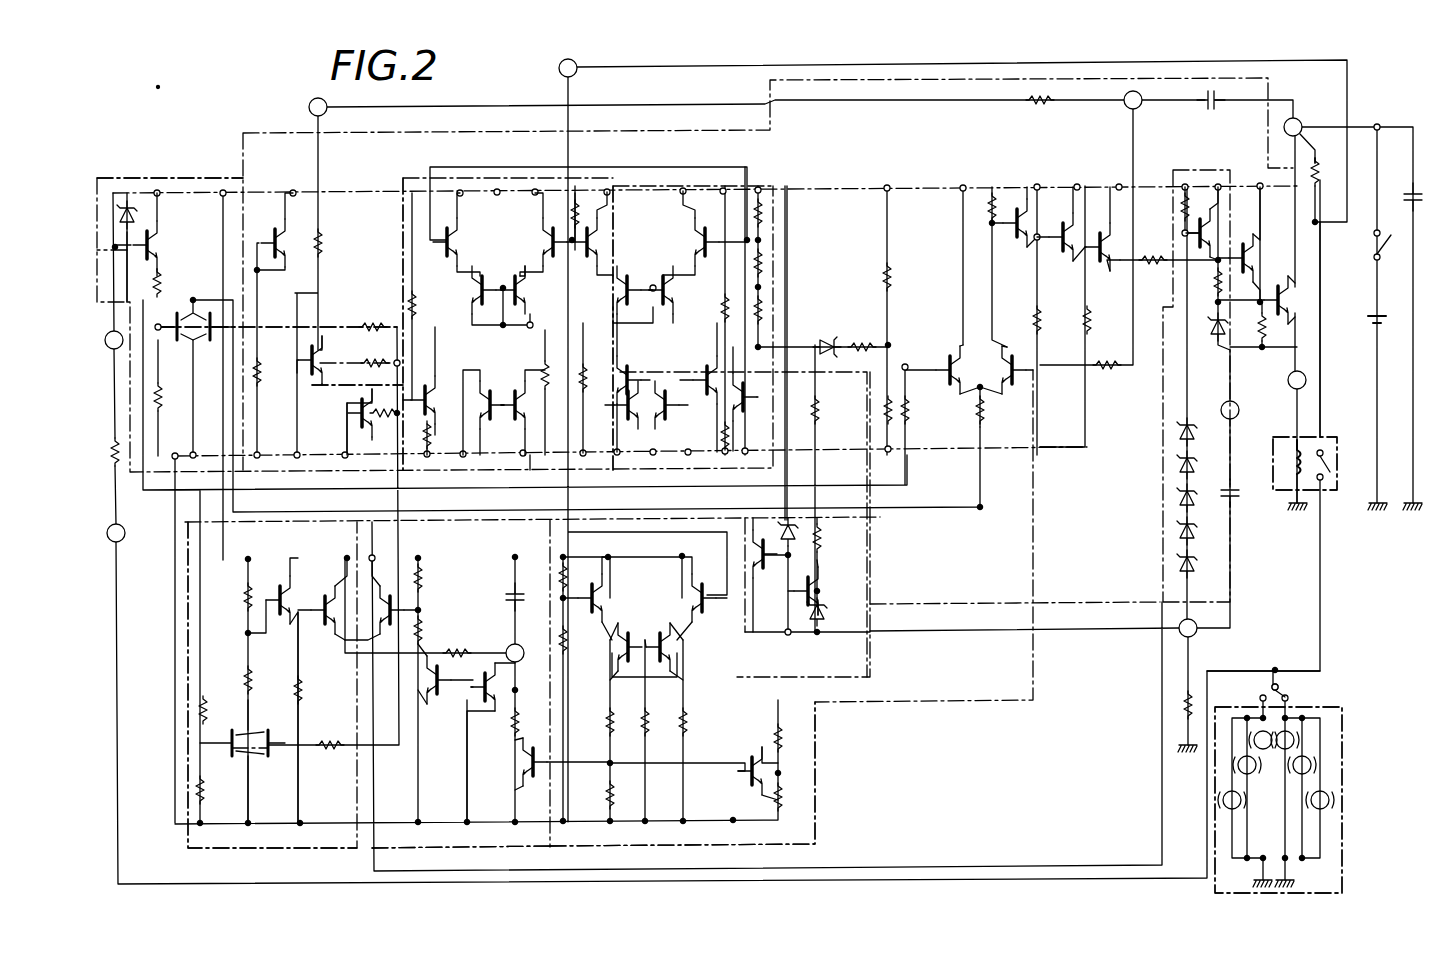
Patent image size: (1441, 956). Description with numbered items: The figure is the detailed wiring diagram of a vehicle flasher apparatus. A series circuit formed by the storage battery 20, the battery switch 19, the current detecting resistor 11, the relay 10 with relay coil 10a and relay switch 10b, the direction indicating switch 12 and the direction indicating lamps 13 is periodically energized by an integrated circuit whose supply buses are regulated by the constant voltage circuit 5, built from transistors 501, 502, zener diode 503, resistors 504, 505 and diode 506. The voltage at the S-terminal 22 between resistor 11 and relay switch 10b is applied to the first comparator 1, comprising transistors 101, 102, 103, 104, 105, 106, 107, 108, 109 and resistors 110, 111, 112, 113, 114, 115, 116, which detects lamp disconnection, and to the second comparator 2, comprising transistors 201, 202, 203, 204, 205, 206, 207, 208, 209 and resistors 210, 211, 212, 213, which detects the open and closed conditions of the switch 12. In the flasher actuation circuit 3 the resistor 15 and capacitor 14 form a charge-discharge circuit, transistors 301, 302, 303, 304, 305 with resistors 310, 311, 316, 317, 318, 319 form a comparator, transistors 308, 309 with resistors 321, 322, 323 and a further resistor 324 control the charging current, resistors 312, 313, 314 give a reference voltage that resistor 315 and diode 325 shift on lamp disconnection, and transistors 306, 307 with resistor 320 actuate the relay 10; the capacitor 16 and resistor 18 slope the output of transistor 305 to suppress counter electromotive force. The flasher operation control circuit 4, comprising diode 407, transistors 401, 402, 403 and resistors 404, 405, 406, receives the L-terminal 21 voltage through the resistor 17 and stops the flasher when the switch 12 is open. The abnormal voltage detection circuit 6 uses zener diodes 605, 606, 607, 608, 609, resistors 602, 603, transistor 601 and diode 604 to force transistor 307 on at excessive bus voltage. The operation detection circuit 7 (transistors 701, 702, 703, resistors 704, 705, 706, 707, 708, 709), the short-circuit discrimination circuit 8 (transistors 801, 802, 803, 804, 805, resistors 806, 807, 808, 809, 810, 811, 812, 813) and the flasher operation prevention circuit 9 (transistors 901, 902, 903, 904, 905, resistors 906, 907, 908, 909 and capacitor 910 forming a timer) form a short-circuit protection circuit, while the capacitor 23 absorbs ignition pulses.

The first comparator 1 is at (612, 174).
The second comparator 2 is at (414, 176).
The flasher actuation circuit 3 is at (736, 126).
The flasher operation control circuit 4 is at (140, 160).
The constant voltage circuit 5 is at (870, 648).
The abnormal voltage detection circuit 6 is at (1158, 612).
The operation detection circuit 7 is at (296, 852).
The short-circuit discrimination circuit 8 is at (650, 852).
The flasher operation prevention circuit 9 is at (406, 852).
The relay 10 is at (1340, 489).
The relay coil 10a is at (1274, 452).
The relay switch 10b is at (1332, 454).
The current detecting resistor 11 is at (1333, 170).
The direction indicating switch 12 is at (1286, 696).
The direction indicating lamps 13 is at (1352, 734).
The charge-discharge capacitor 14 is at (1212, 106).
The resistor 15 is at (1038, 108).
The capacitor 16 is at (1240, 500).
The resistor 17 is at (112, 458).
The resistor 18 is at (1184, 710).
The battery switch 19 is at (1390, 242).
The storage battery 20 is at (1384, 328).
The L-terminal 21 is at (1263, 659).
The S-terminal 22 is at (1346, 329).
The capacitor 23 is at (1418, 200).
The transistor 101 is at (600, 250).
The transistor 102 is at (684, 244).
The transistor 103 is at (614, 290).
The transistor 104 is at (676, 292).
The transistor 105 is at (632, 366).
The transistor 106 is at (631, 424).
The transistor 107 is at (666, 424).
The transistor 108 is at (696, 378).
The transistor 109 is at (744, 394).
The resistor 110 is at (590, 212).
The resistor 111 is at (595, 372).
The resistor 112 is at (710, 318).
The resistor 113 is at (722, 436).
The resistor 114 is at (766, 212).
The resistor 115 is at (768, 266).
The resistor 116 is at (755, 318).
The transistor 201 is at (458, 240).
The transistor 202 is at (544, 240).
The transistor 203 is at (471, 286).
The transistor 204 is at (520, 288).
The transistor 205 is at (484, 398).
The transistor 206 is at (523, 430).
The transistor 207 is at (530, 470).
The transistor 208 is at (434, 386).
The transistor 209 is at (356, 390).
The resistor 210 is at (414, 304).
The resistor 211 is at (542, 372).
The resistor 212 is at (434, 438).
The resistor 213 is at (375, 427).
The transistor 301 is at (942, 364).
The transistor 302 is at (1016, 364).
The transistor 303 is at (1030, 226).
The transistor 304 is at (1072, 254).
The output transistor 305 is at (1106, 244).
The transistor 306 is at (1275, 247).
The output transistor 307 is at (1302, 304).
The transistor 308 is at (306, 352).
The transistor 309 is at (274, 242).
The resistor 310 is at (1000, 214).
The resistor 311 is at (996, 406).
The resistor 312 is at (917, 406).
The resistor 313 is at (888, 282).
The resistor 314 is at (882, 410).
The resistor 315 is at (866, 348).
The resistor 316 is at (1040, 318).
The resistor 317 is at (1092, 318).
The resistor 318 is at (1107, 368).
The resistor 319 is at (1152, 258).
The resistor 320 is at (1300, 337).
The resistor 321 is at (340, 234).
The resistor 322 is at (285, 358).
The resistor 323 is at (382, 350).
The resistor 324 is at (382, 312).
The diode 325 is at (824, 338).
The transistor 401 is at (156, 240).
The transistor 402 is at (181, 326).
The transistor 403 is at (207, 338).
The resistor 404 is at (167, 294).
The resistor 405 is at (167, 390).
The resistor 406 is at (118, 214).
The diode 407 is at (118, 250).
The transistor 501 is at (782, 570).
The transistor 502 is at (796, 605).
The zener diode 503 is at (780, 540).
The resistor 504 is at (820, 416).
The resistor 505 is at (832, 546).
The diode 506 is at (822, 610).
The transistor 601 is at (1210, 228).
The resistor 602 is at (1184, 204).
The resistor 603 is at (1236, 288).
The diode 604 is at (1222, 360).
The zener diode 605 is at (1178, 432).
The zener diode 606 is at (1178, 466).
The zener diode 607 is at (1178, 499).
The zener diode 608 is at (1178, 532).
The zener diode 609 is at (1178, 566).
The transistor 701 is at (238, 768).
The transistor 702 is at (282, 734).
The transistor 703 is at (278, 596).
The resistor 704 is at (218, 700).
The resistor 705 is at (205, 795).
The resistor 706 is at (247, 594).
The resistor 707 is at (268, 668).
The resistor 708 is at (308, 695).
The resistor 709 is at (328, 752).
The transistor 801 is at (602, 596).
The transistor 802 is at (692, 578).
The transistor 803 is at (615, 638).
The transistor 804 is at (678, 638).
The transistor 805 is at (742, 788).
The resistor 806 is at (556, 576).
The resistor 807 is at (564, 648).
The resistor 808 is at (608, 722).
The resistor 809 is at (608, 794).
The resistor 810 is at (646, 730).
The resistor 811 is at (684, 730).
The resistor 812 is at (772, 740).
The resistor 813 is at (776, 800).
The transistor 901 is at (443, 692).
The transistor 902 is at (498, 708).
The transistor 903 is at (522, 769).
The transistor 904 is at (322, 600).
The transistor 905 is at (381, 576).
The resistor 906 is at (420, 578).
The resistor 907 is at (420, 632).
The resistor 908 is at (475, 644).
The resistor 909 is at (516, 722).
The capacitor 910 is at (510, 596).